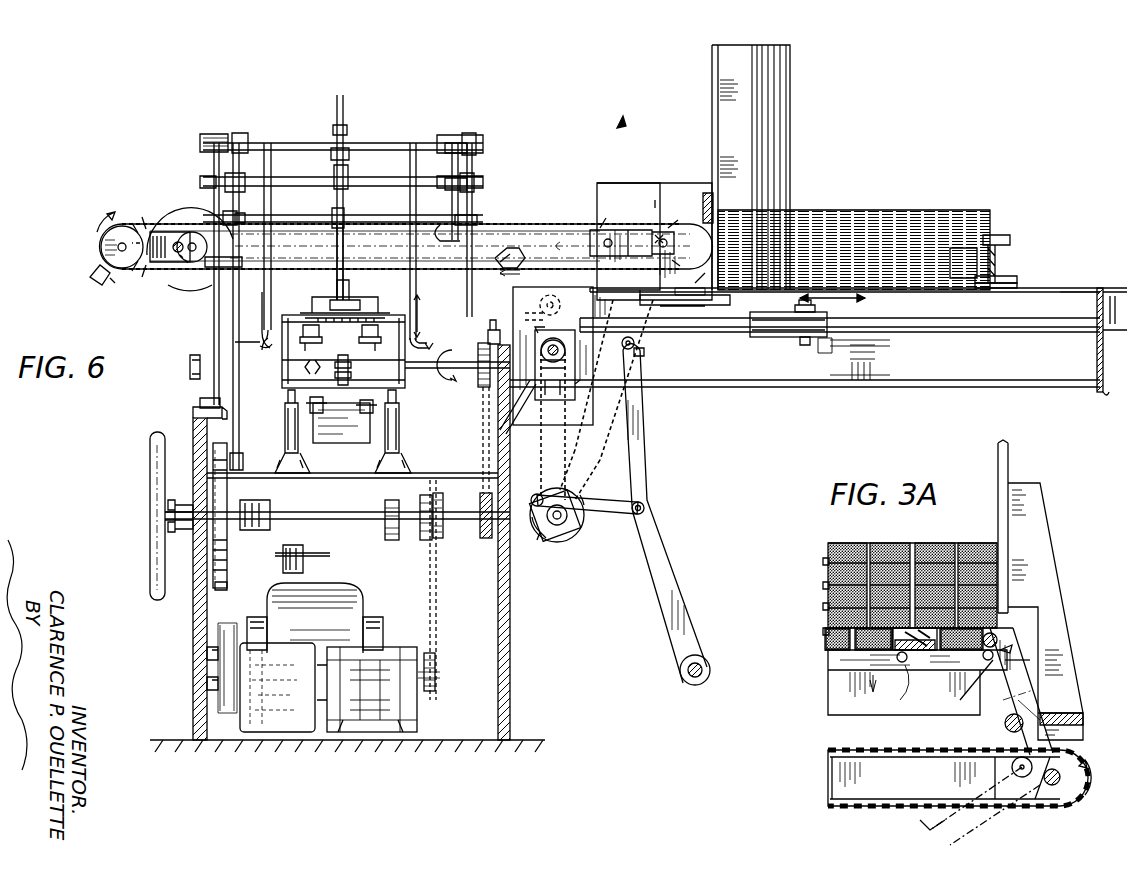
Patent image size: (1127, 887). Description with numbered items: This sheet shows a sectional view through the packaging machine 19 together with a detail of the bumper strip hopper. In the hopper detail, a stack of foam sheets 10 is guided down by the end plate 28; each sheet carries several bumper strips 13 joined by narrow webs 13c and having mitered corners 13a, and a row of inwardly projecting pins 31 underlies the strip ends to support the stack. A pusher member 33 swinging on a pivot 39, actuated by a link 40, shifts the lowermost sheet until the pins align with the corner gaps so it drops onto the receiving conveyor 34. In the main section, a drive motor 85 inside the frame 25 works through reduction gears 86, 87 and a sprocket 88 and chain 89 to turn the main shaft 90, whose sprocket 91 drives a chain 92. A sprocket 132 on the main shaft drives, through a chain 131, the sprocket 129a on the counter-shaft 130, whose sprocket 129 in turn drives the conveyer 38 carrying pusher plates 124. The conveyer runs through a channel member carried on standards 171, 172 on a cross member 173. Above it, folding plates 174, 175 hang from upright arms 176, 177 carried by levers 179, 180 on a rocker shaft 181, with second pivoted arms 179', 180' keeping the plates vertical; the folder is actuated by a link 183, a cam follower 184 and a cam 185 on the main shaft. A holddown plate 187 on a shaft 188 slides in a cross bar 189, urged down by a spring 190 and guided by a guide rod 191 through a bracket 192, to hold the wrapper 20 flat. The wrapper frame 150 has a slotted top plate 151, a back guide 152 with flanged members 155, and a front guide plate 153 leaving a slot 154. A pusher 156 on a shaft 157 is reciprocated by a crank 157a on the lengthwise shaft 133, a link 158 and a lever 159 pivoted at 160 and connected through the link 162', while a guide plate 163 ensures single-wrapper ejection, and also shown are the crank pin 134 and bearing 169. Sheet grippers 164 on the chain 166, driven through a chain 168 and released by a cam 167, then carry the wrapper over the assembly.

In FIG. 3A, the bumper strip sheet 10 is at (938, 598).
In FIG. 3A, the bumper strip 13 is at (828, 642).
In FIG. 3A, the mitered corner 13a is at (838, 545).
In FIG. 3A, the narrow web 13c is at (823, 606).
In FIG. 6, the brick handling machine 19 is at (620, 122).
In FIG. 6, the wrapper 20 is at (908, 215).
In FIG. 6, the frame 25 is at (520, 612).
In FIG. 3A, the end plate 28 is at (1000, 498).
In FIG. 3A, the inwardly projecting pin 31 is at (950, 670).
In FIG. 3A, the pusher member 33 is at (993, 693).
In FIG. 3A, the receiving conveyor 34 is at (905, 752).
In FIG. 6, the conveyer member 38 is at (327, 340).
In FIG. 3A, the pivot 39 is at (1005, 727).
In FIG. 3A, the link 40 is at (975, 815).
In FIG. 6, the drive motor 85 is at (355, 612).
In FIG. 6, the reduction gear 86 is at (267, 732).
In FIG. 6, the reduction gear 87 is at (388, 712).
In FIG. 6, the sprocket 88 is at (434, 670).
In FIG. 6, the chain 89 is at (434, 620).
In FIG. 6, the main shaft 90 is at (395, 528).
In FIG. 6, the sprocket 91 is at (438, 504).
In FIG. 6, the chain 92 is at (440, 540).
In FIG. 6, the pusher plate 124 is at (330, 460).
In FIG. 6, the sprocket 129 is at (338, 384).
In FIG. 6, the sprocket 129a is at (470, 400).
In FIG. 6, the counter-shaft 130 is at (441, 375).
In FIG. 6, the chain 131 is at (486, 454).
In FIG. 6, the sprocket 132 is at (484, 540).
In FIG. 6, the lengthwise extending shaft 133 is at (538, 540).
In FIG. 6, the crank pin 134 is at (575, 510).
In FIG. 6, the frame 150 is at (1020, 378).
In FIG. 6, the slotted top plate 151 is at (1078, 288).
In FIG. 6, the back bar or guide 152 is at (1000, 258).
In FIG. 6, the front and side guide plate 153 is at (775, 142).
In FIG. 6, the slot 154 is at (615, 400).
In FIG. 6, the flanged member 155 is at (972, 282).
In FIG. 6, the pusher 156 is at (830, 300).
In FIG. 6, the shaft 157 is at (957, 333).
In FIG. 6, the crank 157a is at (578, 538).
In FIG. 6, the link 158 is at (618, 505).
In FIG. 6, the lever 159 is at (640, 452).
In FIG. 6, the pivot 160 is at (680, 674).
In FIG. 6, the cylinder 162' is at (757, 334).
In FIG. 6, the guide plate 163 is at (712, 275).
In FIG. 6, the sheet gripper 164 is at (108, 292).
In FIG. 6, the chain 166 is at (556, 228).
In FIG. 6, the release cam 167 is at (185, 270).
In FIG. 6, the chain 168 is at (645, 355).
In FIG. 6, the bearing 169 is at (520, 326).
In FIG. 6, the standard 171 is at (288, 416).
In FIG. 6, the standard 172 is at (398, 440).
In FIG. 6, the cross member 173 is at (345, 478).
In FIG. 6, the folding plate 174 is at (258, 346).
In FIG. 6, the folding plate 175 is at (427, 322).
In FIG. 6, the upwardly extending arm 176 is at (266, 145).
In FIG. 6, the upwardly extending arm 177 is at (420, 148).
In FIG. 6, the lever 179 is at (290, 244).
In FIG. 6, the pivoted arm 179' is at (318, 149).
In FIG. 6, the lever 180 is at (451, 230).
In FIG. 6, the pivoted arm 180' is at (489, 191).
In FIG. 6, the rocker shaft 181 is at (202, 180).
In FIG. 6, the link 183 is at (232, 388).
In FIG. 6, the cam follower 184 is at (220, 572).
In FIG. 6, the cam 185 is at (222, 584).
In FIG. 6, the holddown plate 187 is at (310, 312).
In FIG. 6, the shaft 188 is at (337, 118).
In FIG. 6, the cross block or bar 189 is at (347, 176).
In FIG. 6, the spring 190 is at (360, 290).
In FIG. 6, the guide rod 191 is at (346, 206).
In FIG. 6, the bracket 192 is at (332, 204).